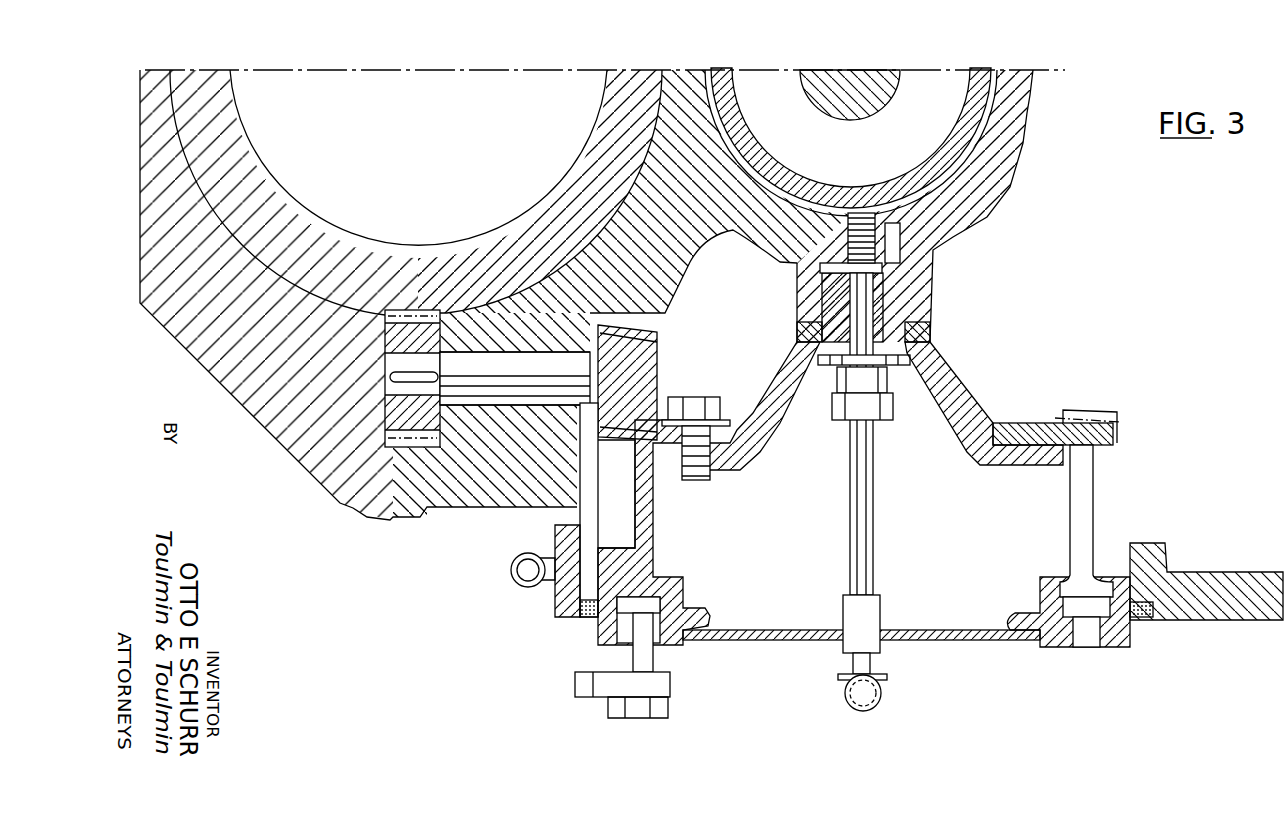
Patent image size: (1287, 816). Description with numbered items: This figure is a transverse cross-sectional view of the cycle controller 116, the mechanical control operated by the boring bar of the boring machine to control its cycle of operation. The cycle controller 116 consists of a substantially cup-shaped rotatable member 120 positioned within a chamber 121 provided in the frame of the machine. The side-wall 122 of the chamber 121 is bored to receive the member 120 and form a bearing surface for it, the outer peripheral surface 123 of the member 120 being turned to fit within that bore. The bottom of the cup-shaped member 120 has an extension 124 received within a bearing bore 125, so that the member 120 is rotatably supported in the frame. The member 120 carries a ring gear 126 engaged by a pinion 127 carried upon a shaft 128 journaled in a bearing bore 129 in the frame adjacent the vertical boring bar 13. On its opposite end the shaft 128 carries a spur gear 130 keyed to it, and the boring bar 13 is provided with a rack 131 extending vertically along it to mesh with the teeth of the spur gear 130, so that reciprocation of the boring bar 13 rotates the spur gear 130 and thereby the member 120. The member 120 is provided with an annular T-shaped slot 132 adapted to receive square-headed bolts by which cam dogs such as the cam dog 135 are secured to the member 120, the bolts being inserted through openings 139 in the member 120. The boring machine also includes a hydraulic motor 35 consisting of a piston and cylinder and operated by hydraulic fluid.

The vertical boring bar 13 is at (428, 184).
The hydraulic motor 35 is at (990, 110).
The cycle controller 116 is at (1147, 517).
The cup-shaped rotatable member 120 is at (953, 380).
The chamber 121 is at (610, 498).
The side-wall 122 is at (610, 523).
The outer peripheral surface 123 is at (598, 632).
The extension 124 is at (905, 300).
The bearing bore 125 is at (903, 313).
The ring gear 126 is at (628, 440).
The pinion 127 is at (657, 335).
The shaft 128 is at (518, 365).
The bearing bore 129 is at (478, 350).
The spur gear 130 is at (453, 300).
The rack 131 is at (400, 300).
The annular T-shaped slot 132 is at (635, 612).
The cam dog 135 is at (672, 687).
The openings 139 is at (1097, 573).